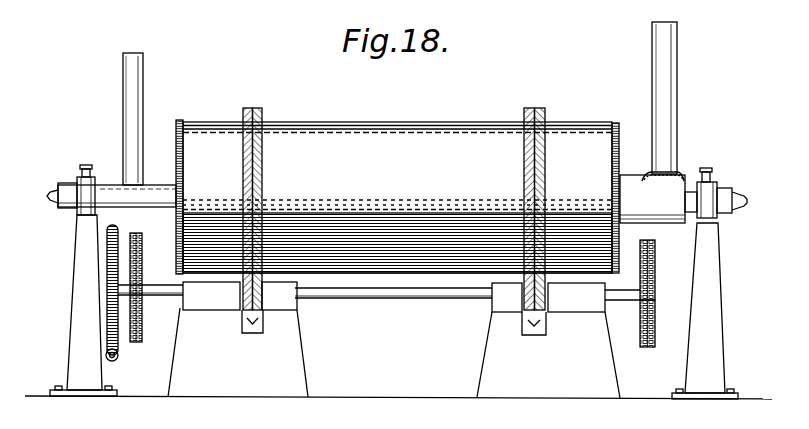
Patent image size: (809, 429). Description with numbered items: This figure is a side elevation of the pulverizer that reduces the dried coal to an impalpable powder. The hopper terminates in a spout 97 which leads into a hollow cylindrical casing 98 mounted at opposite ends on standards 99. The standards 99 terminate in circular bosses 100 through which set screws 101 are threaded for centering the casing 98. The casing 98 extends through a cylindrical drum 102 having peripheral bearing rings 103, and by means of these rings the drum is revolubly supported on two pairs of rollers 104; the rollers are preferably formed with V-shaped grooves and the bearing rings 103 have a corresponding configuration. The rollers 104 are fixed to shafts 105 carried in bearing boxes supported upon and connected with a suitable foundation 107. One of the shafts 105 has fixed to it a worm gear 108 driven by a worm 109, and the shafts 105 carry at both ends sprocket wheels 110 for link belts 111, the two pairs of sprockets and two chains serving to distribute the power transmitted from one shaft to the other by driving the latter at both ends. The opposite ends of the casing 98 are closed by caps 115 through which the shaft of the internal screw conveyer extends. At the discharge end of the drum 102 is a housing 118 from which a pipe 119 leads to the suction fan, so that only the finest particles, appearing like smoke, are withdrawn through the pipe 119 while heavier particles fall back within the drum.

The spout 97 is at (137, 107).
The hollow cylindrical casing 98 is at (152, 193).
The standards 99 is at (77, 278).
The circular bosses 100 is at (96, 176).
The set screws 101 is at (83, 195).
The cylindrical drum 102 is at (318, 119).
The peripheral bearing rings 103 is at (268, 100).
The rollers 104 is at (246, 320).
The shafts 105 is at (164, 292).
The foundation 107 is at (295, 376).
The worm gear 108 is at (107, 258).
The worm 109 is at (118, 356).
The sprocket wheels 110 is at (650, 321).
The link belts 111 is at (652, 268).
The caps 115 is at (747, 199).
The housing 118 is at (669, 215).
The pipe 119 is at (672, 78).